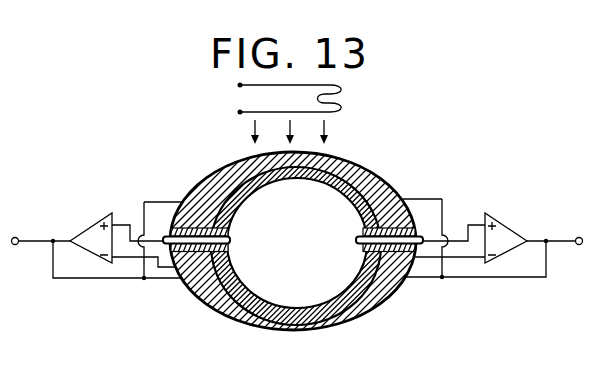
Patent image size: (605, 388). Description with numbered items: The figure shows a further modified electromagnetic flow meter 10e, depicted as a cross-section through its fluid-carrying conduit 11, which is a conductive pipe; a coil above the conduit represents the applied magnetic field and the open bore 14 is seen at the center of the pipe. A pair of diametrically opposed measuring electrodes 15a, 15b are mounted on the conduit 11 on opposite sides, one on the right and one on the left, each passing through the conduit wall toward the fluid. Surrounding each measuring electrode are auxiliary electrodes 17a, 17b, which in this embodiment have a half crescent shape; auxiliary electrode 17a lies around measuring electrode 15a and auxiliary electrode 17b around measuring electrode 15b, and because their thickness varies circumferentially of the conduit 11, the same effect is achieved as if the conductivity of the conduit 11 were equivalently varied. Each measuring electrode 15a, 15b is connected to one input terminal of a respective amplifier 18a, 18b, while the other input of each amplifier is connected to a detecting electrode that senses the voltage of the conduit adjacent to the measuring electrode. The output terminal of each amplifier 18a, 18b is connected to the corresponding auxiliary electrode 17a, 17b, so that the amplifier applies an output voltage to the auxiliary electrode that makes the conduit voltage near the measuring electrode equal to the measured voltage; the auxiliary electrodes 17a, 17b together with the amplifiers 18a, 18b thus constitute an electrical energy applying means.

The electromagnetic flow meter 10e is at (365, 143).
The fluid-carrying conduit 11 is at (230, 195).
The central bore 14 is at (295, 303).
The measuring electrode 15a is at (358, 238).
The measuring electrode 15b is at (230, 238).
The auxiliary electrode 17a is at (380, 195).
The auxiliary electrode 17b is at (205, 193).
The amplifier 18a is at (507, 223).
The amplifier 18b is at (89, 222).